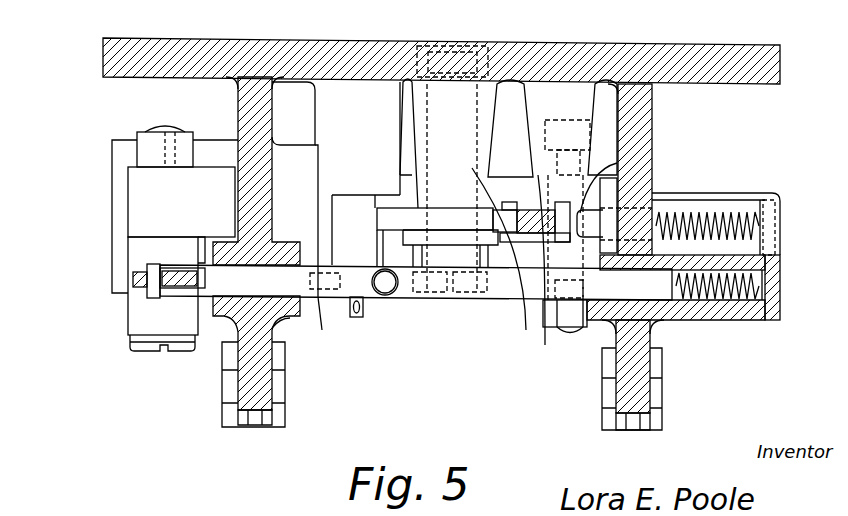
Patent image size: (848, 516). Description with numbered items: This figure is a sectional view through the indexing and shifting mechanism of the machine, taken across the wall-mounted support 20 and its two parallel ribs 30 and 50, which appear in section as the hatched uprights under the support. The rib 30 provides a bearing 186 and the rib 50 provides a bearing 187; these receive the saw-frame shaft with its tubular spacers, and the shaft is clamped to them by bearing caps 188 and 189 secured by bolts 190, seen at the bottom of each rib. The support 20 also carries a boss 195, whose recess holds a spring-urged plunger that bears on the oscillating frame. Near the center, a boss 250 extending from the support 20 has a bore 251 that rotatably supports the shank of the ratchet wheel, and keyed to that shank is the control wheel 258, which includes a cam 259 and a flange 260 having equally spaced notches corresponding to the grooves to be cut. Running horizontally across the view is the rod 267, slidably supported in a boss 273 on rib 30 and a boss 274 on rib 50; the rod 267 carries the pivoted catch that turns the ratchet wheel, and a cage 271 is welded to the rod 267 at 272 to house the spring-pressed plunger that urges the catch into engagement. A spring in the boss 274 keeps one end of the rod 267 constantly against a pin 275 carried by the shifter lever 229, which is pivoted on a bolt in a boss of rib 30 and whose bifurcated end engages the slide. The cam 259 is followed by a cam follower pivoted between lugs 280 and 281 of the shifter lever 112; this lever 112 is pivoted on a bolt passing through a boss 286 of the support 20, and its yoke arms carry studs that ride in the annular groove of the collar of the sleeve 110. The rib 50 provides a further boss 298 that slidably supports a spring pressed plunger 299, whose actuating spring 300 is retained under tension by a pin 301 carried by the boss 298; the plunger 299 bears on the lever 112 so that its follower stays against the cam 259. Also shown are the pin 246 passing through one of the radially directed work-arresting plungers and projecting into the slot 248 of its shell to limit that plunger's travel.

The support 20 is at (720, 58).
The rib 30 is at (247, 136).
The rib 50 is at (640, 160).
The sleeve 110 is at (507, 180).
The shifter lever 112 is at (544, 338).
The bearing 186 is at (230, 358).
The bearing 187 is at (652, 364).
The bearing cap 188 is at (230, 388).
The bearing cap 189 is at (608, 388).
The bolts 190 is at (625, 418).
The boss 195 is at (331, 165).
The shifter lever 229 is at (137, 274).
The pin 246 is at (715, 304).
The slot 248 is at (482, 178).
The boss 250 is at (417, 137).
The bore 251 is at (425, 103).
The control wheel 258 is at (471, 300).
The cam 259 is at (442, 222).
The flange 260 is at (507, 258).
The rod 267 is at (322, 300).
The cage 271 is at (387, 283).
The weld 272 is at (370, 280).
The boss 273 is at (290, 320).
The boss 274 is at (742, 313).
The pin 275 is at (150, 288).
The lug 280 is at (526, 306).
The lug 281 is at (518, 198).
The boss 286 is at (542, 108).
The boss 298 is at (721, 203).
The spring pressed plunger 299 is at (606, 185).
The actuating spring 300 is at (734, 212).
The pin 301 is at (765, 222).